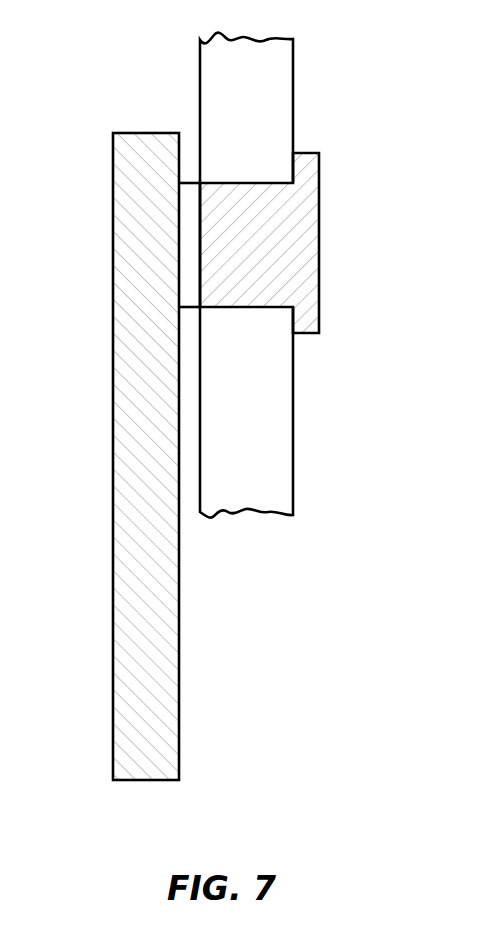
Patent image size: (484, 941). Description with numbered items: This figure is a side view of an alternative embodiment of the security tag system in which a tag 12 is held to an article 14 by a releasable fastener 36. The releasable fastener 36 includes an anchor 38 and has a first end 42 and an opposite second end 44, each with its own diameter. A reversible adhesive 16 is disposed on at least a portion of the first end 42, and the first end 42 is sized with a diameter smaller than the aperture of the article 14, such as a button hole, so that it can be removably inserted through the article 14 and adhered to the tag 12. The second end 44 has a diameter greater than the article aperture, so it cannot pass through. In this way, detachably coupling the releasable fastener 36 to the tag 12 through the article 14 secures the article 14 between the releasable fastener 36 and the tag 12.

The tag 12 is at (128, 712).
The article 14 is at (283, 71).
The reversible adhesive 16 is at (192, 193).
The releasable fastener 36 is at (300, 223).
The anchor 38 is at (290, 228).
The first end 42 is at (199, 266).
The second end 44 is at (330, 281).